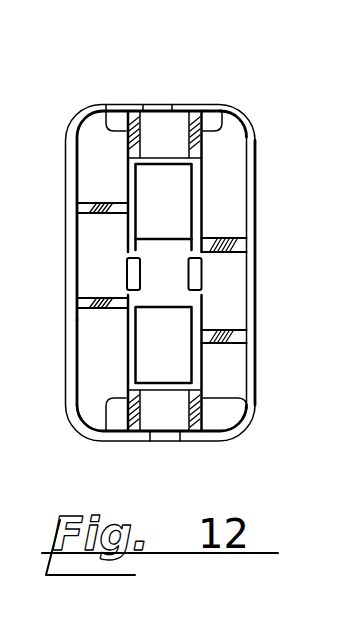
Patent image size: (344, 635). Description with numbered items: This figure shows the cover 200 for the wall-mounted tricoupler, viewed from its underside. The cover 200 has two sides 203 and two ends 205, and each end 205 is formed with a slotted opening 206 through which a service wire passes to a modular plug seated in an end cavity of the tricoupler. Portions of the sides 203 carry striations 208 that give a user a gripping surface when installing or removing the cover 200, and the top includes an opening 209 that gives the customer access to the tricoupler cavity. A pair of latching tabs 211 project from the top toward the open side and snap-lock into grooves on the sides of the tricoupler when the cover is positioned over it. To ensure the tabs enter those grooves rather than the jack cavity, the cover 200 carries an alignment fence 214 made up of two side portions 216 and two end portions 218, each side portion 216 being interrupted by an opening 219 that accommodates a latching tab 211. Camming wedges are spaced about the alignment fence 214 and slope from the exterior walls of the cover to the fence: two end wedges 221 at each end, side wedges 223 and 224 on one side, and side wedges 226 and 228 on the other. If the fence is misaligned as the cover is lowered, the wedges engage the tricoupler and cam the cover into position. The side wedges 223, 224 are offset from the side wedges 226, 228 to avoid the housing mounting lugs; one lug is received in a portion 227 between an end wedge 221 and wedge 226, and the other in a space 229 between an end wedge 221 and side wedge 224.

The cover 200 is at (68, 100).
The side 203 is at (257, 210).
The end 205 is at (158, 104).
The slotted opening 206 is at (168, 441).
The striations 208 is at (65, 263).
The opening 209 is at (170, 295).
The latching tab 211 is at (128, 270).
The alignment fence 214 is at (121, 392).
The side portion 216 is at (127, 357).
The end portion 218 is at (165, 158).
The opening 219 is at (203, 291).
The end wedge 221 is at (106, 104).
The side wedge 223 is at (90, 203).
The side wedge 224 is at (93, 310).
The side wedge 226 is at (230, 238).
The portion 227 is at (235, 150).
The side wedge 228 is at (233, 344).
The space 229 is at (88, 383).